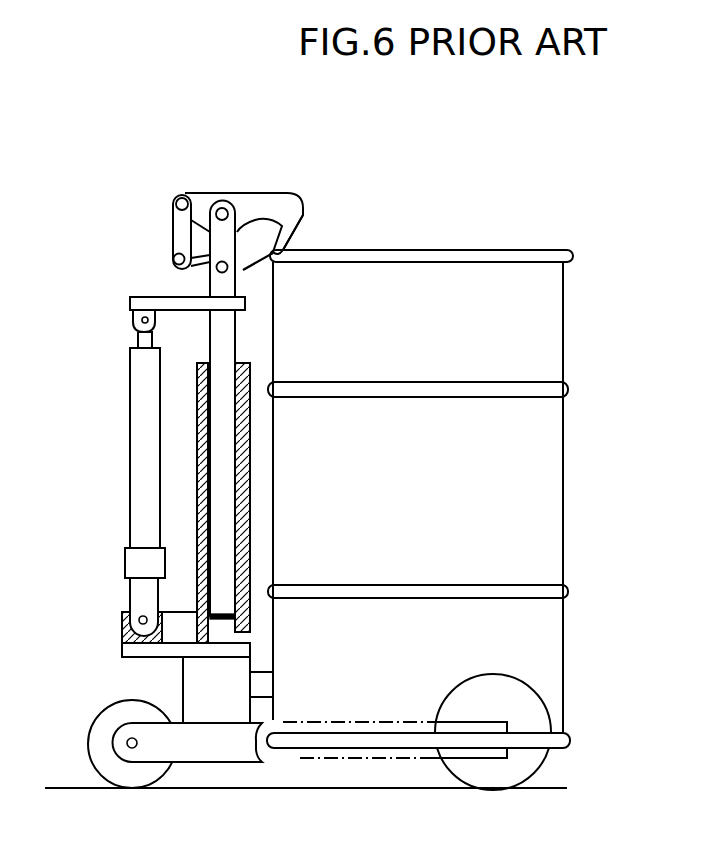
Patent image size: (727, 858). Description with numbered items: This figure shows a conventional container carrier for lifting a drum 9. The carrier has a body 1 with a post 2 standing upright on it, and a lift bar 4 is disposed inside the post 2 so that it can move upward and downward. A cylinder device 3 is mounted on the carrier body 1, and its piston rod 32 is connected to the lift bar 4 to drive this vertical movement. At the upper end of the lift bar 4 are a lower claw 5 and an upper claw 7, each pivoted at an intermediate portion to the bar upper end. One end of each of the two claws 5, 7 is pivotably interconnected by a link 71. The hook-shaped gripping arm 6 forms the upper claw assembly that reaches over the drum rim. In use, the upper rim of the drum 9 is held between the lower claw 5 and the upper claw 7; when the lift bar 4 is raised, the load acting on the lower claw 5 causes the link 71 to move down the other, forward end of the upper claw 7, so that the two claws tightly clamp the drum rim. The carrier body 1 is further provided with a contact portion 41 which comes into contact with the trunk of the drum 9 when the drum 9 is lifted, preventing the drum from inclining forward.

The body 1 is at (232, 748).
The post 2 is at (245, 475).
The cylinder device 3 is at (143, 417).
The piston rod 32 is at (137, 337).
The lift bar 4 is at (225, 342).
The contact portion 41 is at (267, 672).
The lower claw 5 is at (258, 270).
The gripping hook arm 6 is at (248, 205).
The upper claw 7 is at (285, 223).
The link 71 is at (170, 232).
The drum 9 is at (528, 317).